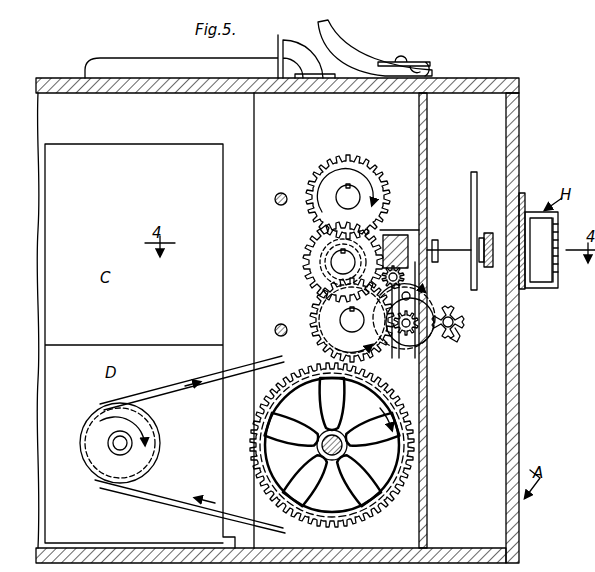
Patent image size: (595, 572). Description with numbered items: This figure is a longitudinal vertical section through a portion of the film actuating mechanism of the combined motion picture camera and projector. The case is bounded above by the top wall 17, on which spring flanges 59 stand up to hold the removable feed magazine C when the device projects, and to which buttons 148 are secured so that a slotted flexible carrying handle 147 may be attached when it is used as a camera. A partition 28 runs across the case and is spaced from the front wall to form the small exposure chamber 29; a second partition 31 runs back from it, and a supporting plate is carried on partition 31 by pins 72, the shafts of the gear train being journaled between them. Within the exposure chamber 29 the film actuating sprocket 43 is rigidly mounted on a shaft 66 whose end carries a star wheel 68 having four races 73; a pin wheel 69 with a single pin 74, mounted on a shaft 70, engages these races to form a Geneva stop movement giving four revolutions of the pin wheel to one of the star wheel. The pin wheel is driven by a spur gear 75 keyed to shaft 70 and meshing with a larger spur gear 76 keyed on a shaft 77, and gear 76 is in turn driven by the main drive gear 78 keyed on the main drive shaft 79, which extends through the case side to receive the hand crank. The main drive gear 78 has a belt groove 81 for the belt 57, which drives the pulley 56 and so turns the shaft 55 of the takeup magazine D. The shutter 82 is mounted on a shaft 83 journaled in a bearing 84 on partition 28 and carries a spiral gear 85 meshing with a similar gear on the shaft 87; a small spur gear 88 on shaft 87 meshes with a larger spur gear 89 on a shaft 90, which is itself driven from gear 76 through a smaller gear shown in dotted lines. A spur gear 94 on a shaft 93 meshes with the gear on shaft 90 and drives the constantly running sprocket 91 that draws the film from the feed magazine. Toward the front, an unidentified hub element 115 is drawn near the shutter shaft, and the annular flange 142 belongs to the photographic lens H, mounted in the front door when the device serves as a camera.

The top wall 17 is at (214, 86).
The partition 28 is at (428, 126).
The exposure chamber 29 is at (467, 463).
The partition 31 is at (275, 320).
The spring flanges 59 is at (105, 70).
The flexible handle 147 is at (355, 64).
The buttons 148 is at (424, 66).
The pins 72 is at (275, 197).
The shaft 93 is at (350, 185).
The spur gear 94 is at (312, 190).
The sprocket 91 is at (313, 250).
The spur gear 89 is at (325, 262).
The shaft 90 is at (325, 270).
The shaft 77 is at (342, 318).
The spur gear 76 is at (330, 336).
The spur gear 75 is at (352, 321).
The small spur gear 88 is at (365, 305).
The spiral gear 85 is at (396, 235).
The shaft 87 is at (410, 294).
The shaft 70 is at (410, 340).
The pin 74 is at (426, 300).
The races 73 is at (412, 336).
The pin wheel 69 is at (412, 350).
The shaft 66 is at (463, 324).
The star wheel 68 is at (454, 320).
The film actuating sprocket 43 is at (460, 332).
The shutter 82 is at (471, 180).
The shaft 83 is at (457, 249).
The bearing 84 is at (435, 240).
The knurled hub 115 is at (489, 233).
The annular flange 142 is at (524, 197).
The shaft 55 is at (115, 448).
The pulley 56 is at (117, 483).
The belt 57 is at (162, 494).
The main drive gear 78 is at (249, 437).
The main drive shaft 79 is at (330, 457).
The belt groove 81 is at (374, 537).